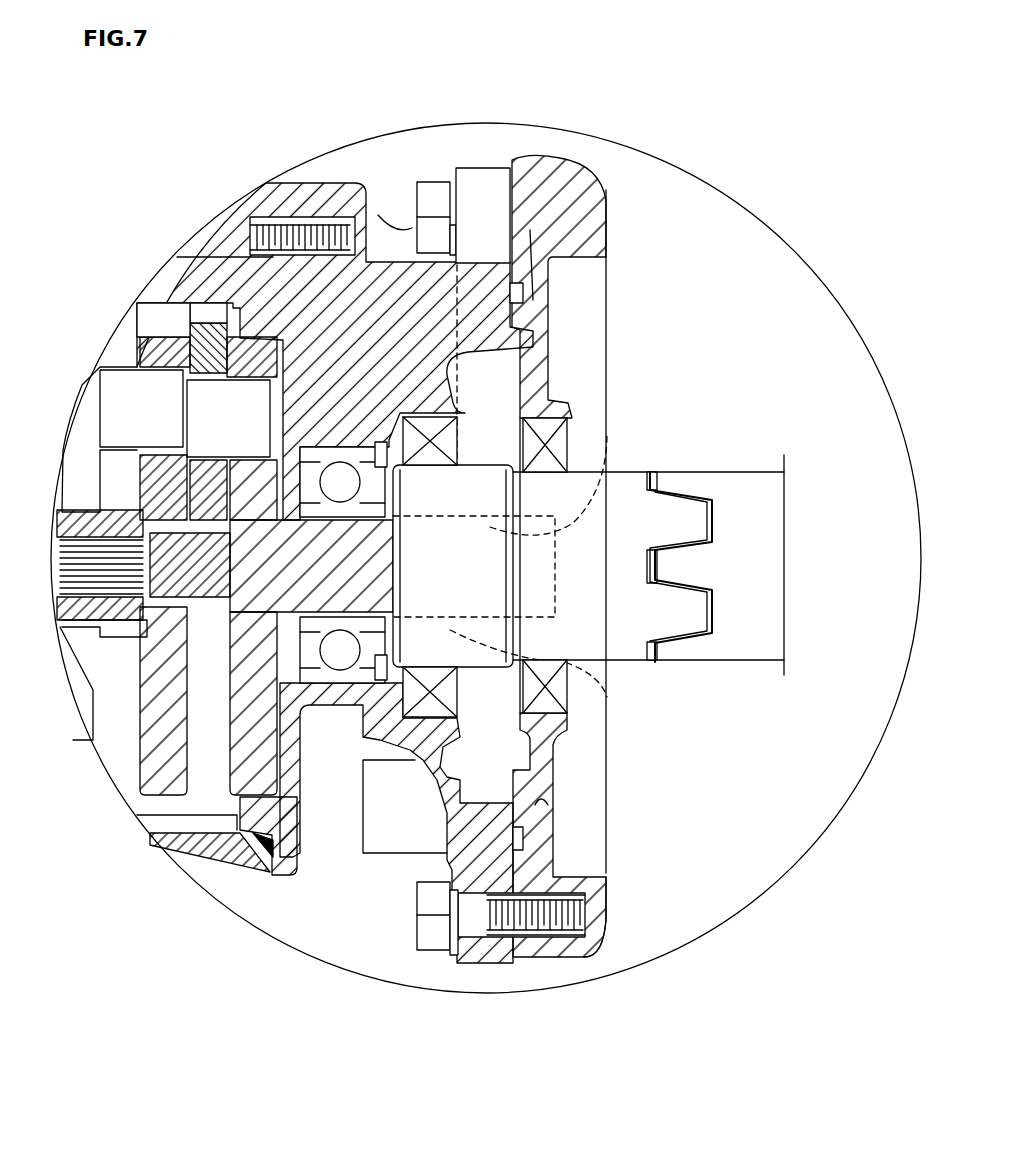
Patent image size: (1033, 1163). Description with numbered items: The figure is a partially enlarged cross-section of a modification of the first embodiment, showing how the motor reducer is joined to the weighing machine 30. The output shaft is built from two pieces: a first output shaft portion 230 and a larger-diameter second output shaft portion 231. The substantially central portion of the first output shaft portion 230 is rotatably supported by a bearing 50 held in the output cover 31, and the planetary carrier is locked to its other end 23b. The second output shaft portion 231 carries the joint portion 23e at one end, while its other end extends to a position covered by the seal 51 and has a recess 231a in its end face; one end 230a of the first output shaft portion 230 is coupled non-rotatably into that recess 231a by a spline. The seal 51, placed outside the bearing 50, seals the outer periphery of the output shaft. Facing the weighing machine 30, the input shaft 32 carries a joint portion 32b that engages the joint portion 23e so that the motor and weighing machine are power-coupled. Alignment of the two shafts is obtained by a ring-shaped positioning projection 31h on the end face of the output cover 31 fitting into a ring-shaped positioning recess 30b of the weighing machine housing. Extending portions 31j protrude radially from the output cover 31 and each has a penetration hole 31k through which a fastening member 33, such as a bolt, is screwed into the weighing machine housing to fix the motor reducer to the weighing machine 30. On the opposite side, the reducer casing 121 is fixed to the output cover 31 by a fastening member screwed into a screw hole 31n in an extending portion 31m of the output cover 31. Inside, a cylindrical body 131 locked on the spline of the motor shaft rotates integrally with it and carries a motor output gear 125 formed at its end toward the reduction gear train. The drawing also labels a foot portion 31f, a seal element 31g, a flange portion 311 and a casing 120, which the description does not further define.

The output cover 31 is at (303, 273).
The extending portion 31m is at (320, 232).
The first output shaft portion 230 is at (397, 423).
The positioning projection 31h is at (528, 230).
The second output shaft portion 231 is at (443, 187).
The screw hole 31n is at (380, 212).
The other end of output shaft 23b is at (300, 770).
The joint portion 23e is at (670, 510).
The recess 231a is at (665, 490).
The input shaft 32 is at (742, 490).
The joint portion 32b is at (695, 655).
The seal 51 is at (450, 690).
The weighing machine 30 is at (610, 915).
The one end of first output shaft portion 230a is at (640, 531).
The positioning recess 30b is at (533, 800).
The extending portion 31j is at (463, 937).
The fastening member 33 is at (590, 905).
The flange portion 311 is at (600, 933).
The penetration hole 31k is at (467, 923).
The foot portion 31f is at (292, 853).
The seal 31g is at (262, 858).
The bearing 50 is at (383, 765).
The reducer casing 121 is at (228, 872).
The cylindrical body 131 is at (182, 690).
The motor output gear 125 is at (140, 757).
The casing 120 is at (113, 757).